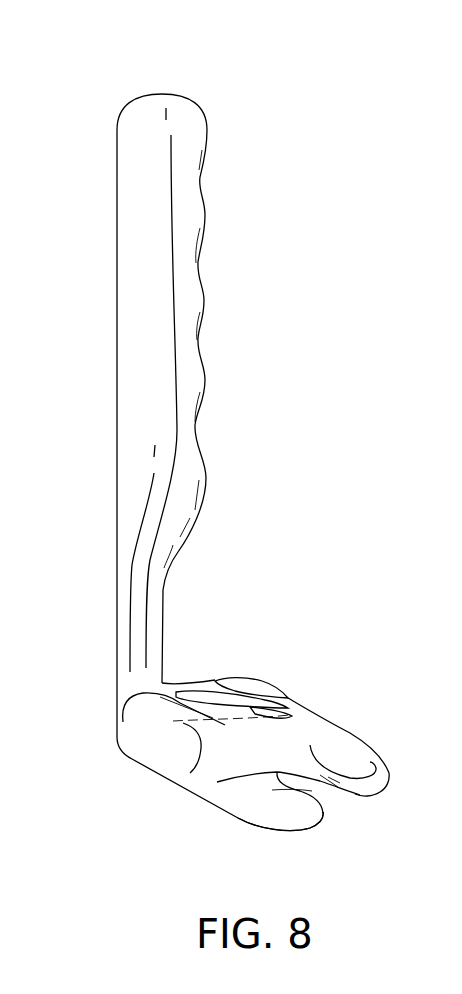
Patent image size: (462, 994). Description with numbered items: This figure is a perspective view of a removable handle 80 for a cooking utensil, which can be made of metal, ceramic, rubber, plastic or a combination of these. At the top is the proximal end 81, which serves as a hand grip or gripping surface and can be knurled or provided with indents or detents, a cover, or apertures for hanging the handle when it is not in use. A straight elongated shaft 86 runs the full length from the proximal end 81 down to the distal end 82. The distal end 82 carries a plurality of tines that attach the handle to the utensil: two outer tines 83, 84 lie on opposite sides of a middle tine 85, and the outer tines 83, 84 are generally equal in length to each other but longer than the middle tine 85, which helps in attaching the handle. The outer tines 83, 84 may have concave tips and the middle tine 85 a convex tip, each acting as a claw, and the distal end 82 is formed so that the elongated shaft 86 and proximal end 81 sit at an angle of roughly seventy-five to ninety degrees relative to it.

The removable handle 80 is at (318, 160).
The proximal end 81 is at (161, 92).
The distal end 82 is at (190, 679).
The outer tine 83 is at (390, 776).
The outer tine 84 is at (310, 700).
The middle tine 85 is at (318, 825).
The elongated shaft 86 is at (142, 563).